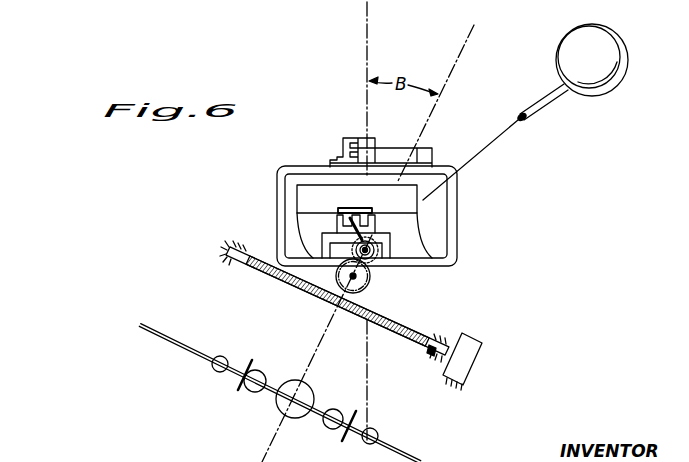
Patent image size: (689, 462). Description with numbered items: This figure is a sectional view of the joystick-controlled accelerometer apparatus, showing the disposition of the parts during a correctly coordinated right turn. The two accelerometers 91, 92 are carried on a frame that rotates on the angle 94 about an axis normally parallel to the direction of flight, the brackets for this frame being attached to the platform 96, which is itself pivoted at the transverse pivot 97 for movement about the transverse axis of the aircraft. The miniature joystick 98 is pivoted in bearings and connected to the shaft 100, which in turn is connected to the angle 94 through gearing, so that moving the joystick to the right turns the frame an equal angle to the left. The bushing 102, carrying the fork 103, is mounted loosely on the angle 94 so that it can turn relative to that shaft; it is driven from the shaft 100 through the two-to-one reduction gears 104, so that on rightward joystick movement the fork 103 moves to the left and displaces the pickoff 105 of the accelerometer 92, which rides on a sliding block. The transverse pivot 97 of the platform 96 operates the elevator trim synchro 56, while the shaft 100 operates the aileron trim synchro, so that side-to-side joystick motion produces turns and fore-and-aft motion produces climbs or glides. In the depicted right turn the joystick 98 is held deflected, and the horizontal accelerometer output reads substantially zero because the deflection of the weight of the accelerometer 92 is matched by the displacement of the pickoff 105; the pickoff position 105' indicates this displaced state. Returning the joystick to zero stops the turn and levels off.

The elevator trim synchro 56 is at (483, 343).
The accelerometer 91 is at (389, 143).
The accelerometer 92 is at (403, 203).
The angle 94 is at (372, 260).
The platform 96 is at (420, 337).
The transverse pivot 97 is at (436, 356).
The miniature joystick 98 is at (553, 102).
The shaft 100 is at (336, 277).
The bushing 102 is at (376, 250).
The fork 103 is at (362, 233).
The reduction gears 104 is at (358, 284).
The pickoff 105 is at (299, 198).
The contact fork 105' is at (301, 221).